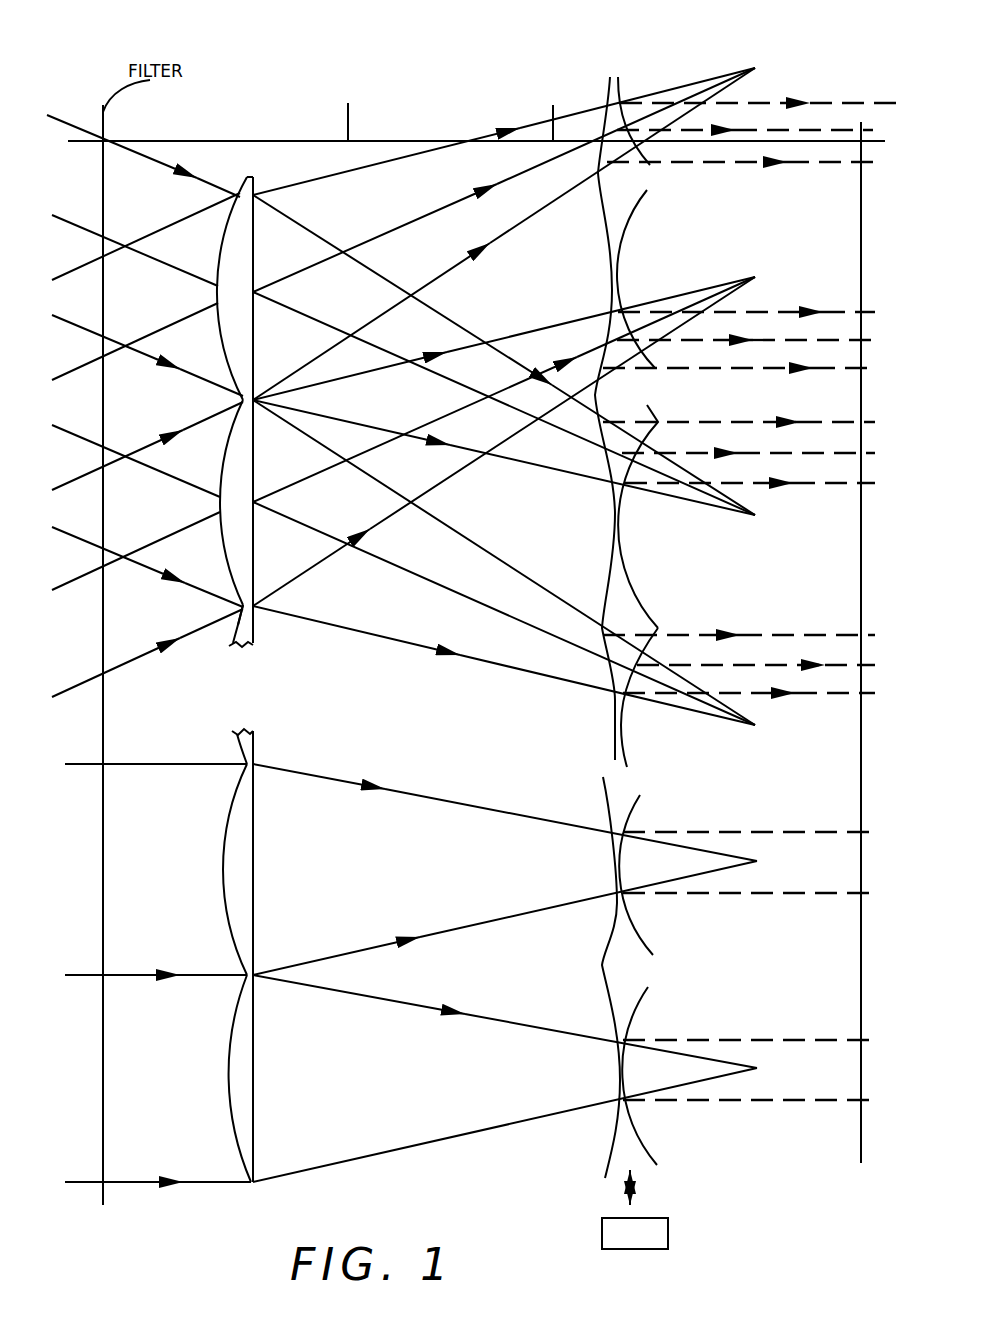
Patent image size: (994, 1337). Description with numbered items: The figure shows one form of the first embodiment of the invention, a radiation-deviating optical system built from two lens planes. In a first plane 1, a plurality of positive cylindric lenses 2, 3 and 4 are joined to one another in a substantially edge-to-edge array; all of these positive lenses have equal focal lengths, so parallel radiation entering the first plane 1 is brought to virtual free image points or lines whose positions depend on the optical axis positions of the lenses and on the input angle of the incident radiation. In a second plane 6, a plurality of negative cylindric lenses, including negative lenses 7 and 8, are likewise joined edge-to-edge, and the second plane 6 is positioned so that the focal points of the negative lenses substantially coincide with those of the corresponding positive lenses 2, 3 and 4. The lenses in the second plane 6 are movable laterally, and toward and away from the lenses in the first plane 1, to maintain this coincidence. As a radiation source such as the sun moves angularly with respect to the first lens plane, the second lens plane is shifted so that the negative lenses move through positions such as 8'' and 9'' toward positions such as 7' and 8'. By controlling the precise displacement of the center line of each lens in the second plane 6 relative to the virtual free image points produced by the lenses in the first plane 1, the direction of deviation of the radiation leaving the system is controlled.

The first plane 1 is at (258, 178).
The positive cylindric lens 2 is at (255, 348).
The positive cylindric lens 3 is at (255, 462).
The positive cylindric lens 4 is at (258, 645).
The second plane 6 is at (591, 108).
The negative cylindric lens 7 is at (641, 100).
The negative cylindric lens 8 is at (647, 279).
The position of negative lens 7 7' is at (648, 516).
The position of negative lens 8 8' is at (649, 697).
The position of negative lens 8 8'' is at (654, 875).
The position of negative lens 9 9'' is at (657, 1076).